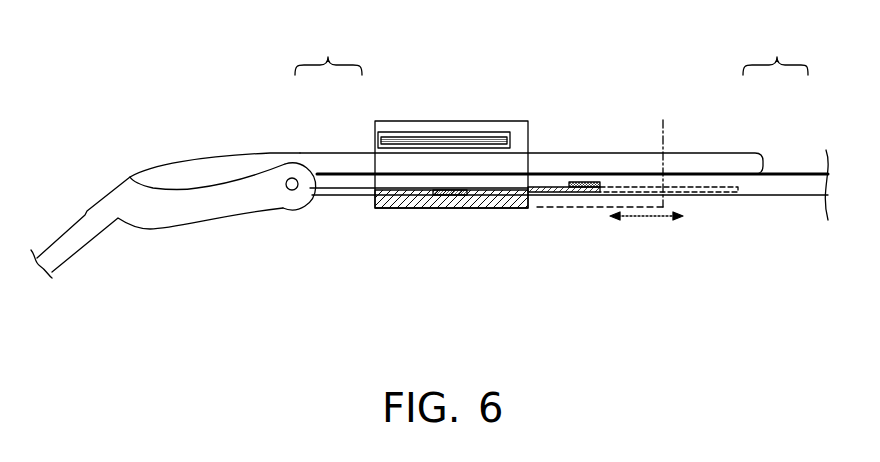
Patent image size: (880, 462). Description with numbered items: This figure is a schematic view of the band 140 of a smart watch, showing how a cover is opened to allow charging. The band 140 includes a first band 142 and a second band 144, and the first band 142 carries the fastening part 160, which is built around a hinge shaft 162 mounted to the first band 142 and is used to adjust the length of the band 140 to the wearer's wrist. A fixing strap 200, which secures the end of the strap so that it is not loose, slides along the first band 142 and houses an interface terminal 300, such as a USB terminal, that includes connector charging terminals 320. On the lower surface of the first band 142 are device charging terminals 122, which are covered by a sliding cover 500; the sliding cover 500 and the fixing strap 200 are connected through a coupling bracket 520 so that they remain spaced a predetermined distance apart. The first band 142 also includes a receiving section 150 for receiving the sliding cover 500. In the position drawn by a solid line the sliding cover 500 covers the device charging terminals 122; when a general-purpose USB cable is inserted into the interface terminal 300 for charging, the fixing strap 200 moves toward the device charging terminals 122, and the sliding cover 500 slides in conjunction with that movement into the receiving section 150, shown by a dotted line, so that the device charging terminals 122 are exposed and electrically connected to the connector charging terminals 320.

The device charging terminals 122 is at (585, 186).
The band 140 is at (551, 52).
The first band 142 is at (336, 186).
The second band 144 is at (365, 168).
The receiving section 150 is at (705, 196).
The fastening part 160 is at (165, 235).
The hinge shaft 162 is at (292, 191).
The fixing strap 200 is at (455, 113).
The interface terminal 300 is at (409, 131).
The connector charging terminals 320 is at (440, 209).
The sliding cover 500 is at (586, 196).
The coupling bracket 520 is at (508, 209).